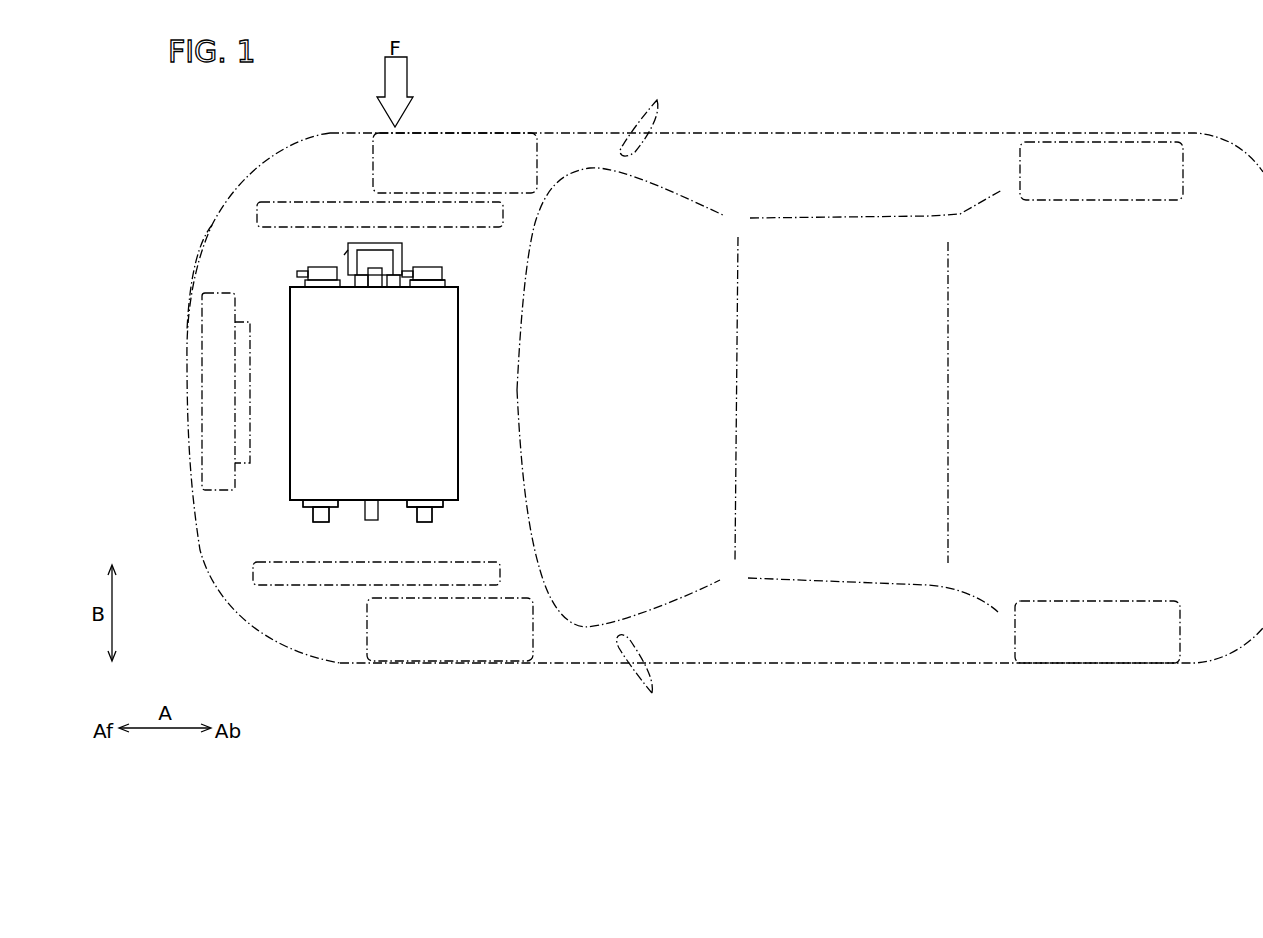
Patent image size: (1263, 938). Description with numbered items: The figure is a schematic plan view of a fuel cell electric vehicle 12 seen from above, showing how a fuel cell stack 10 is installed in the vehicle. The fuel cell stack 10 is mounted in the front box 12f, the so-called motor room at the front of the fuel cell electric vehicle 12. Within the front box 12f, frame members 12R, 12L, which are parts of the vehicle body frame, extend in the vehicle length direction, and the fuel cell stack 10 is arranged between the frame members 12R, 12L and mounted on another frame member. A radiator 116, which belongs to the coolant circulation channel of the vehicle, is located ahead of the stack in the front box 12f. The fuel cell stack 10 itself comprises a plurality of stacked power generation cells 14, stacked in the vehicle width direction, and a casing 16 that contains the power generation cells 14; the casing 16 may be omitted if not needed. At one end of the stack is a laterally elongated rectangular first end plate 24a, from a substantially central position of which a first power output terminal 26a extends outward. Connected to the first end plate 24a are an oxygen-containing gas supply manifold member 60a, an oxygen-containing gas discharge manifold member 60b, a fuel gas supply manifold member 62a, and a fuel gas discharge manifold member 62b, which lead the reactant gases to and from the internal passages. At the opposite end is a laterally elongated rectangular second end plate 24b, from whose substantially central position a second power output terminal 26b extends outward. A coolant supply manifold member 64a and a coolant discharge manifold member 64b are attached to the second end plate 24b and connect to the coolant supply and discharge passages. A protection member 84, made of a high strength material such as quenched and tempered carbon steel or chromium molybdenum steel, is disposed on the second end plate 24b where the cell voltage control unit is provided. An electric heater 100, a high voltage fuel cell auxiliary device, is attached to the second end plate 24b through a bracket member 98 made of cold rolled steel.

The fuel cell stack 10 is at (418, 412).
The fuel cell electric vehicle 12 is at (726, 130).
The front box 12f is at (213, 221).
The frame member 12R is at (283, 200).
The frame member 12L is at (283, 562).
The power generation cell 14 is at (446, 437).
The casing 16 is at (456, 360).
The first end plate 24a is at (458, 503).
The second end plate 24b is at (455, 287).
The first power output terminal 26a is at (372, 522).
The second power output terminal 26b is at (373, 288).
The oxygen-containing gas supply manifold member 60a is at (427, 522).
The oxygen-containing gas discharge manifold member 60b is at (320, 511).
The fuel gas supply manifold member 62a is at (320, 522).
The fuel gas discharge manifold member 62b is at (425, 511).
The coolant supply manifold member 64a is at (430, 267).
The coolant discharge manifold member 64b is at (325, 267).
The protection member 84 is at (388, 252).
The bracket member 98 is at (372, 255).
The electric heater 100 is at (347, 250).
The radiator 116 is at (213, 331).